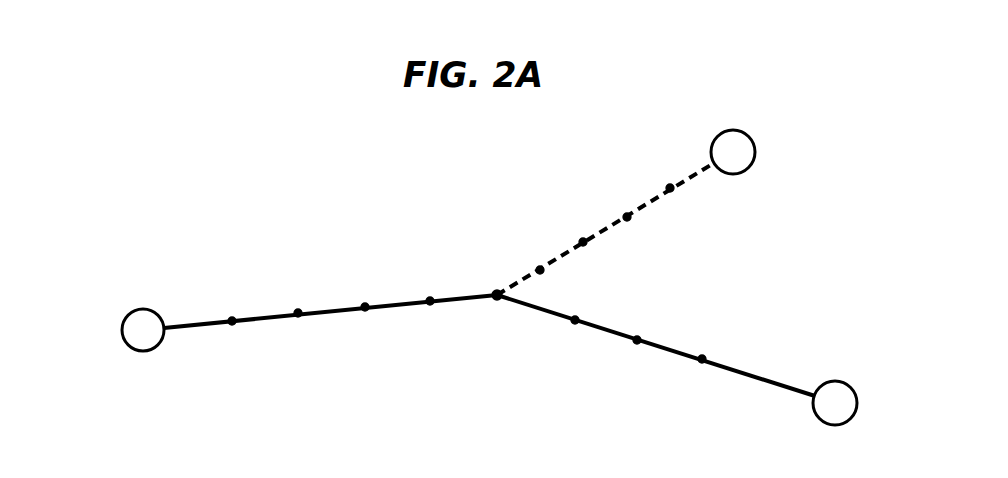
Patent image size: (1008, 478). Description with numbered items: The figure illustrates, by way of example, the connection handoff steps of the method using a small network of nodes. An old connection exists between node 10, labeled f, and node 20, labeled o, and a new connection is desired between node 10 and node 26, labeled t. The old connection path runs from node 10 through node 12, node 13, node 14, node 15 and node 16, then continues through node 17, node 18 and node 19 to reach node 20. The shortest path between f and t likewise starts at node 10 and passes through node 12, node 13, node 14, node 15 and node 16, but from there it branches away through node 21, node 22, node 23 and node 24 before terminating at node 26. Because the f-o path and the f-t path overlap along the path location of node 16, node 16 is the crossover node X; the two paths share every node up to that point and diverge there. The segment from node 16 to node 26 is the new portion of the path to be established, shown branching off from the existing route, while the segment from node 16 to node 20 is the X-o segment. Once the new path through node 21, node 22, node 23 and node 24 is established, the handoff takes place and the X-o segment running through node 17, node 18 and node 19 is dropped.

The node 10 is at (127, 344).
The node 12 is at (232, 325).
The node 13 is at (298, 317).
The node 14 is at (365, 311).
The node 15 is at (430, 305).
The crossover node 16 is at (497, 299).
The node 17 is at (575, 324).
The node 18 is at (637, 344).
The node 19 is at (702, 363).
The node 20 is at (843, 382).
The node 21 is at (538, 269).
The node 22 is at (581, 241).
The node 23 is at (625, 216).
The node 24 is at (669, 187).
The node 26 is at (749, 137).